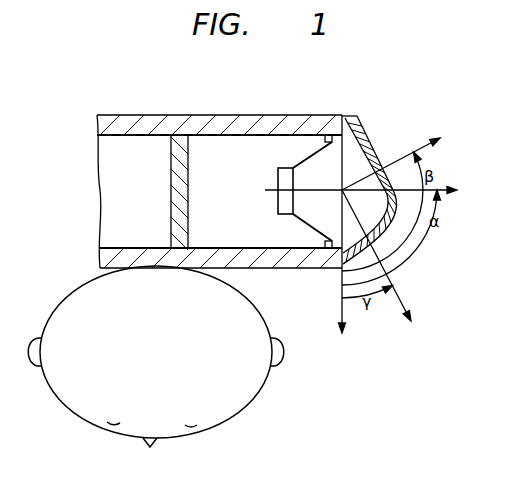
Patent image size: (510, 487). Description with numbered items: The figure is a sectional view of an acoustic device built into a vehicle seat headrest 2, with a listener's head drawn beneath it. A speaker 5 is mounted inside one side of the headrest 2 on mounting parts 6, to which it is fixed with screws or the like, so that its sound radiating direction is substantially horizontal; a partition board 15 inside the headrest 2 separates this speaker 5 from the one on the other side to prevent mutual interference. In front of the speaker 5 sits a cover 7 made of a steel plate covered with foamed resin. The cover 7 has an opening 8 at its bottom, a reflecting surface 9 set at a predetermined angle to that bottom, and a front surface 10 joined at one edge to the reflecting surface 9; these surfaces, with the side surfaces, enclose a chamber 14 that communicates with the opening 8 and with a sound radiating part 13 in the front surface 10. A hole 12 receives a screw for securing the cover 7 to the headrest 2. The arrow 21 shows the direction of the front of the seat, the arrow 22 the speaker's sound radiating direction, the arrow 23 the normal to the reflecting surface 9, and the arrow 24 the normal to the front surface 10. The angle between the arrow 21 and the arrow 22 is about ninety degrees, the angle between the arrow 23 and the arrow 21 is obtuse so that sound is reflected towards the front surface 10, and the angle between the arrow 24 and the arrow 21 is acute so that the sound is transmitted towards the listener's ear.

The headrest 2 is at (126, 123).
The speaker 5 is at (278, 178).
The mounting part 6 is at (325, 139).
The cover 7 is at (375, 128).
The opening 8 is at (343, 173).
The reflecting surface 9 is at (357, 160).
The front surface 10 is at (415, 252).
The hole 12 is at (356, 117).
The sound radiating part 13 is at (387, 260).
The chamber 14 is at (377, 150).
The partition board 15 is at (176, 176).
The arrow indicating the direction of the front of the seat 21 is at (342, 308).
The arrow indicating the speaker's sound radiating direction 22 is at (440, 196).
The arrow indicating the normal to the reflecting surface 23 is at (423, 153).
The arrow indicating the normal to the front surface 24 is at (397, 303).